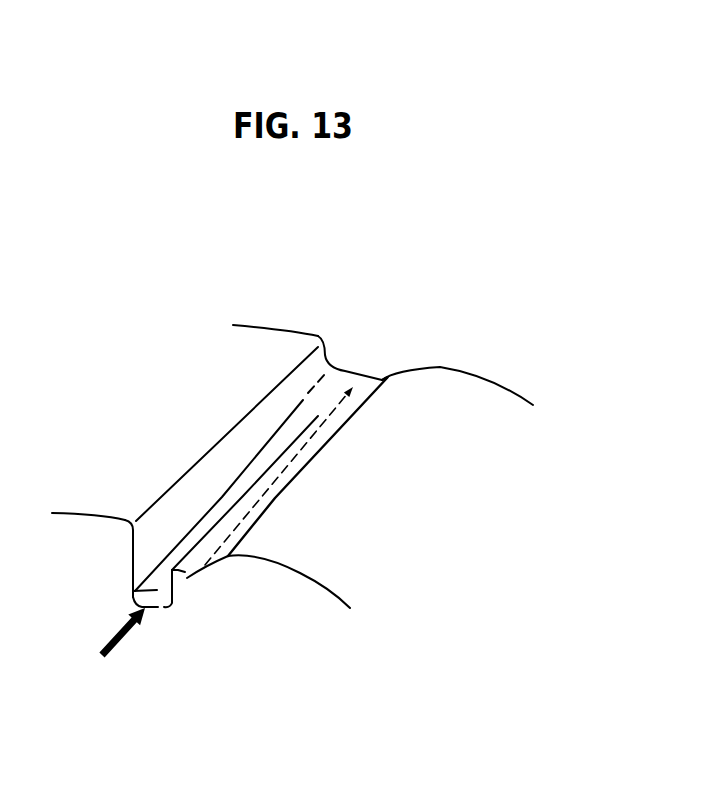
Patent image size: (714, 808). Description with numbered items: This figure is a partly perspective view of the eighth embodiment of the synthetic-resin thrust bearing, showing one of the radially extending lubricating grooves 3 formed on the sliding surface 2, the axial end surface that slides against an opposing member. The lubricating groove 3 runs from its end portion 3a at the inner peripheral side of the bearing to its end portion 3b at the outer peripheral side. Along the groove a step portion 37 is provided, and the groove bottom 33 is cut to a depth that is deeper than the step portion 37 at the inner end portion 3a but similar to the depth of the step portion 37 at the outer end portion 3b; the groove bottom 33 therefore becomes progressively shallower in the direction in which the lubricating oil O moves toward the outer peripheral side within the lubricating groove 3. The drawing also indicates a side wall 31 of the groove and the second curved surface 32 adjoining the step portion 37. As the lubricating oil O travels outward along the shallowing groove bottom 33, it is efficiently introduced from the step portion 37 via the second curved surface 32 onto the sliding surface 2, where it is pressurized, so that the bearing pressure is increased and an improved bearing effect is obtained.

The sliding surface 2 is at (212, 357).
The lubricating groove 3 is at (253, 473).
The end portion at the inner peripheral side 3a is at (150, 561).
The end portion at the outer peripheral side 3b is at (351, 344).
The side wall 31 is at (205, 447).
The second curved surface 32 is at (402, 388).
The groove bottom 33 is at (133, 598).
The step portion 37 is at (184, 573).
The lubricating oil O is at (114, 650).